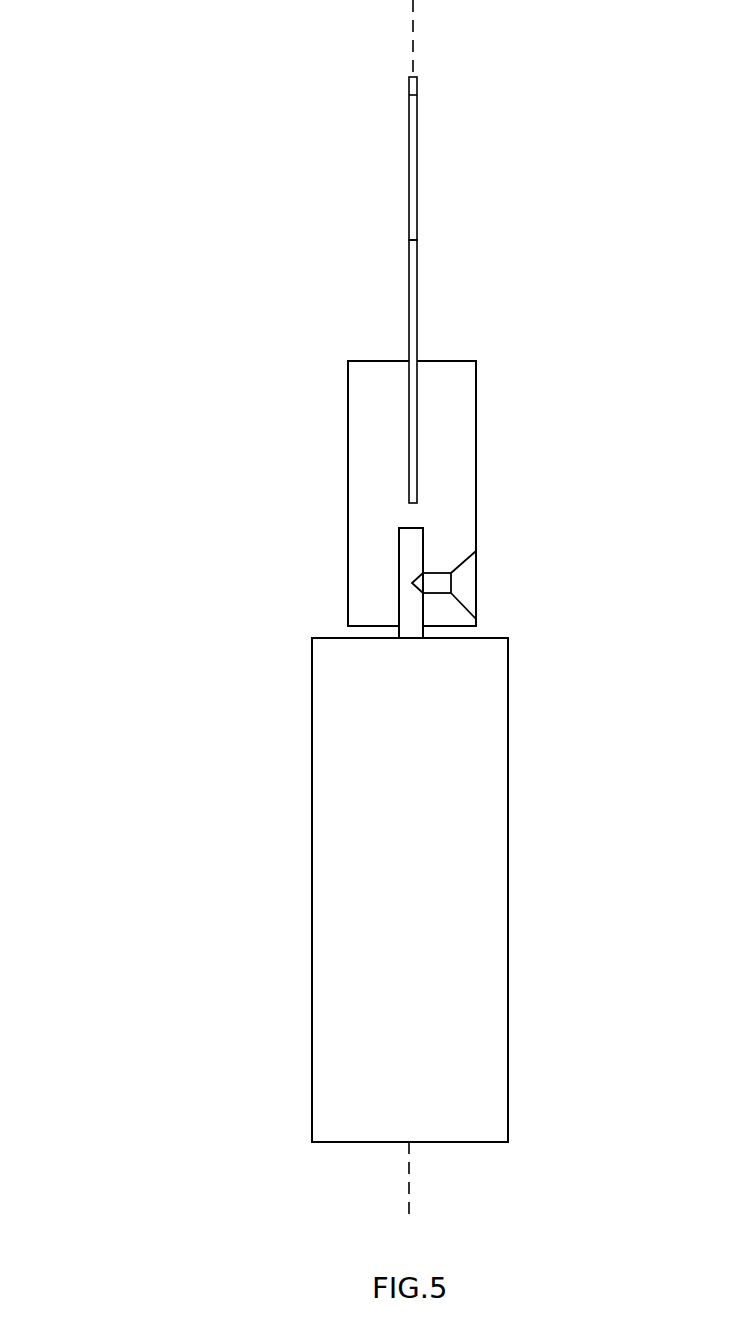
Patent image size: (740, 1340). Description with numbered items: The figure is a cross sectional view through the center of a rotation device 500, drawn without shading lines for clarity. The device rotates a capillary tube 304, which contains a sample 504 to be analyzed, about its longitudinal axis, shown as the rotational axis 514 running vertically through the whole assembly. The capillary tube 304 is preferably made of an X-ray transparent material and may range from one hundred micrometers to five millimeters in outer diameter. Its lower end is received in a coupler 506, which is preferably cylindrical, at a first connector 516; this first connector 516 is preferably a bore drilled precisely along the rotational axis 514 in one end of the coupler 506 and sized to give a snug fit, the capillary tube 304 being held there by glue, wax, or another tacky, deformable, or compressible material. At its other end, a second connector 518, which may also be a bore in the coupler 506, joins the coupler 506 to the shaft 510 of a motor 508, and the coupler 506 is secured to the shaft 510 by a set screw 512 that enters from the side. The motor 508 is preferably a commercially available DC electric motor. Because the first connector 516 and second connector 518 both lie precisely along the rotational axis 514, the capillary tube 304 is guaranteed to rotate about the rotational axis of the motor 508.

The rotation device 500 is at (100, 209).
The sample 504 is at (417, 213).
The capillary tube 304 is at (417, 315).
The coupler 506 is at (473, 448).
The first connector 516 is at (410, 455).
The shaft 510 is at (408, 550).
The second connector 518 is at (425, 540).
The set screw 512 is at (470, 587).
The motor 508 is at (505, 788).
The rotational axis 514 is at (415, 37).